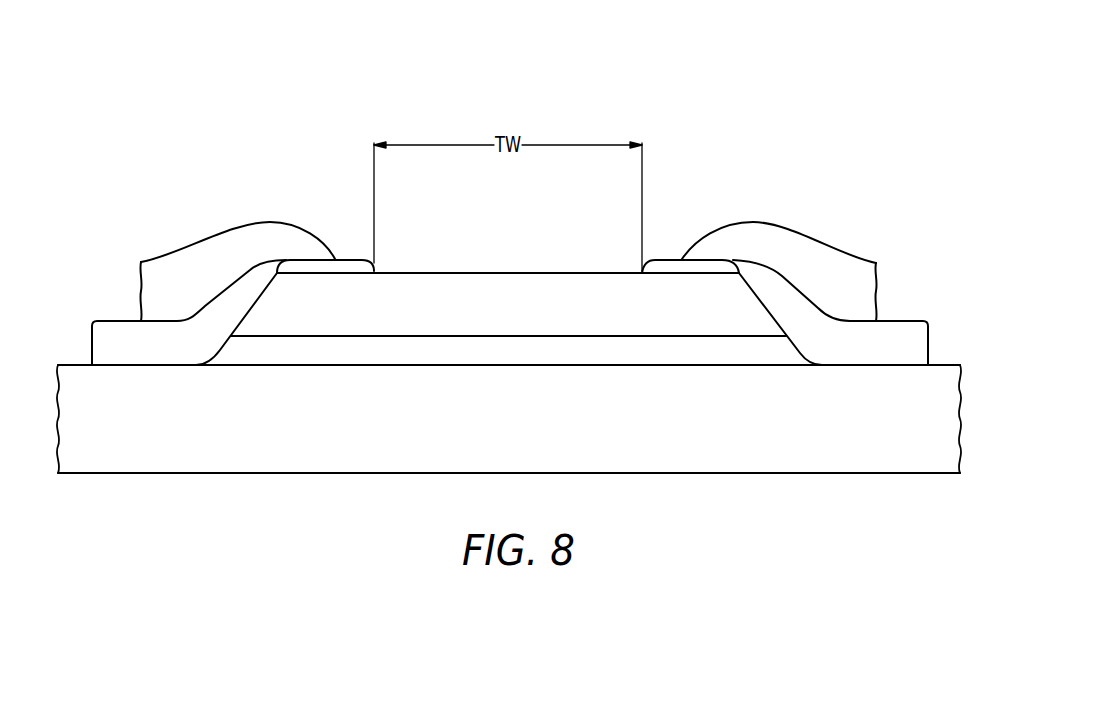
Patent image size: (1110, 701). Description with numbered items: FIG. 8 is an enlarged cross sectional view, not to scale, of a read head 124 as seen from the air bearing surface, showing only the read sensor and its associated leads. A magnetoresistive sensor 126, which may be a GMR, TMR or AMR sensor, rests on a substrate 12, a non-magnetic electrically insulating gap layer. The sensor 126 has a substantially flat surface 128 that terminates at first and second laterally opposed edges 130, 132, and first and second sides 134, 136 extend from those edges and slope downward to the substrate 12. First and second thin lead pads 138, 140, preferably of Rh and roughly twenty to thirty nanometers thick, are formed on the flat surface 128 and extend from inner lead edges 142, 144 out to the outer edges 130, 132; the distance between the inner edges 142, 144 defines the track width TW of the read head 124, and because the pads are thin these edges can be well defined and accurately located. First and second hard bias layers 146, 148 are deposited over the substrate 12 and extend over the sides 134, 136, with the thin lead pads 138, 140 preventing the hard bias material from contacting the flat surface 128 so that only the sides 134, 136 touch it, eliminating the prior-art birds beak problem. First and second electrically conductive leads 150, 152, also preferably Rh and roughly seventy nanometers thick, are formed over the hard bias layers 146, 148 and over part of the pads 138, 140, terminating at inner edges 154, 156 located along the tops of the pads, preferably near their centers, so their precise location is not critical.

The read head 124 is at (770, 102).
The substrate 12 is at (675, 474).
The magnetoresistive sensor 126 is at (515, 336).
The substantially flat surface 128 is at (510, 272).
The first laterally opposed edge 130 is at (277, 276).
The second laterally opposed edge 132 is at (740, 277).
The first side 134 is at (252, 305).
The second side 136 is at (763, 308).
The first thin lead pad 138 is at (352, 275).
The second thin lead pad 140 is at (660, 274).
The first inner lead edge 142 is at (377, 268).
The second inner lead edge 144 is at (642, 268).
The first hard bias layer 146 is at (160, 355).
The second hard bias layer 148 is at (861, 355).
The first electrically conductive lead 150 is at (202, 250).
The second electrically conductive lead 152 is at (818, 250).
The first lead inner edge 154 is at (333, 257).
The second lead inner edge 156 is at (682, 258).